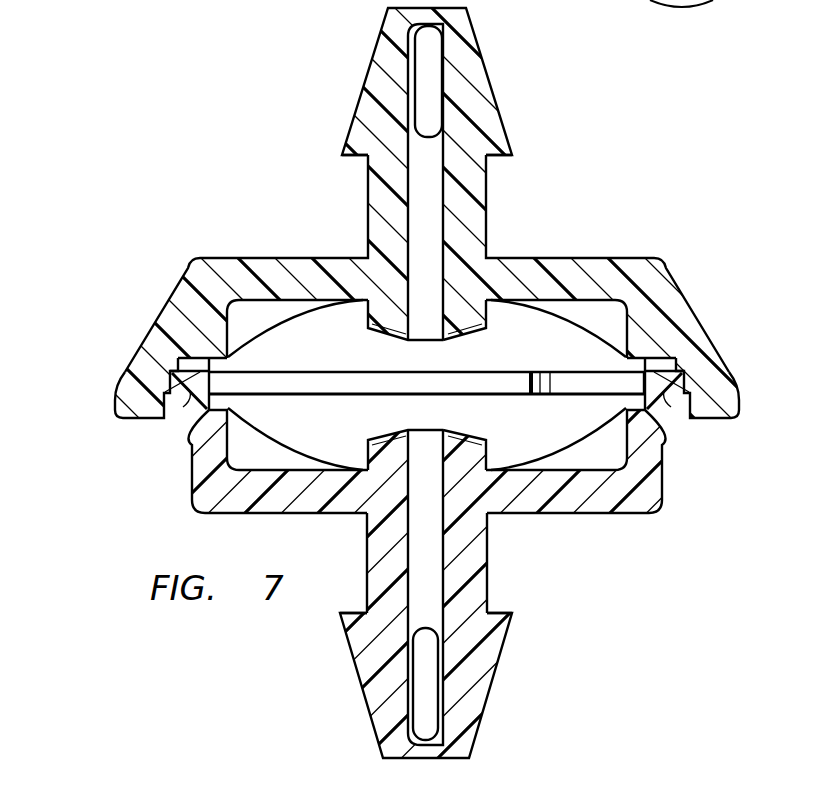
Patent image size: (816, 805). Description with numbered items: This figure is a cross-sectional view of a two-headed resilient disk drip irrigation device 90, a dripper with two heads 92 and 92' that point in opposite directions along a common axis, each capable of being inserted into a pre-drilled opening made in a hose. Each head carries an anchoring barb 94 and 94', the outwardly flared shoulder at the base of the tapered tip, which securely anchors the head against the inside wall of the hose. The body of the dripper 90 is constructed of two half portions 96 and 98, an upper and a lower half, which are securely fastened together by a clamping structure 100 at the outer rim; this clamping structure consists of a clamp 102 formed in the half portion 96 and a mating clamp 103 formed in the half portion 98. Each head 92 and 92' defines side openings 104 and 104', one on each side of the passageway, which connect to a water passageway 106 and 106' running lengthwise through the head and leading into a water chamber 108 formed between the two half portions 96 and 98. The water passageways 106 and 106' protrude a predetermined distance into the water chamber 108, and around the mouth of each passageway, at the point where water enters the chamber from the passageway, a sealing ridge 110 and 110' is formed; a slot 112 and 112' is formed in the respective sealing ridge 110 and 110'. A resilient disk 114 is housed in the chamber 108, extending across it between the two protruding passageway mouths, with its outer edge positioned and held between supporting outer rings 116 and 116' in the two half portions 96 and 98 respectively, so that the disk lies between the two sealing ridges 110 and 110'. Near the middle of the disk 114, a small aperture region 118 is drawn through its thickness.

The two-headed resilient disk drip irrigation device 90 is at (408, 402).
The head 92 is at (455, 77).
The head 92' is at (455, 691).
The anchoring barb 94 is at (458, 154).
The anchoring barb 94' is at (458, 613).
The half portion 96 is at (408, 402).
The half portion 98 is at (408, 402).
The clamping structure 100 is at (408, 401).
The clamp 102 is at (120, 405).
The mating clamp 103 is at (190, 438).
The side opening 104 is at (478, 81).
The side opening 104' is at (480, 684).
The water passageway 106 is at (475, 182).
The water passageway 106' is at (472, 587).
The water chamber 108 is at (534, 317).
The sealing ridge 110 is at (399, 335).
The sealing ridge 110' is at (395, 436).
The slot 112 is at (482, 335).
The slot 112' is at (483, 436).
The disk 114 is at (313, 371).
The supporting outer ring 116 is at (427, 336).
The supporting outer ring 116' is at (427, 432).
The membrane aperture 118 is at (547, 397).